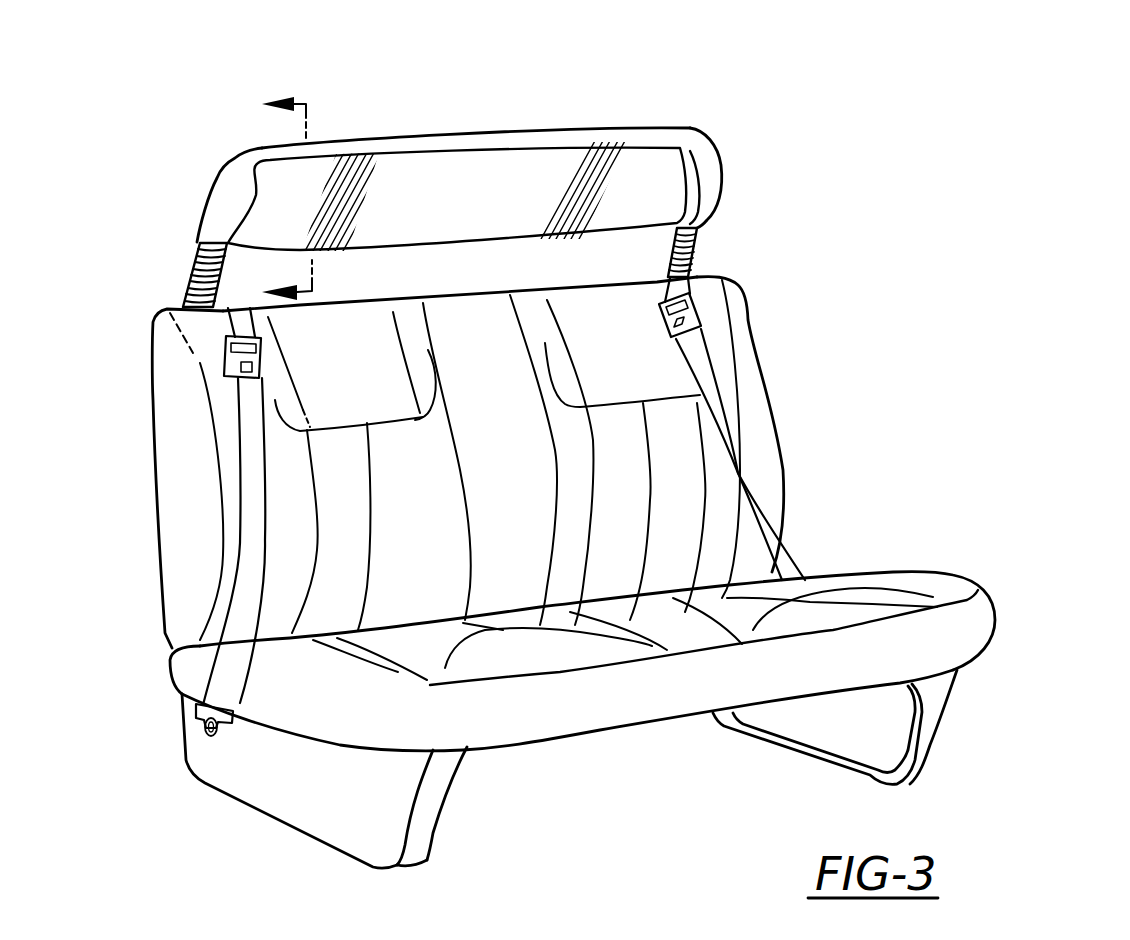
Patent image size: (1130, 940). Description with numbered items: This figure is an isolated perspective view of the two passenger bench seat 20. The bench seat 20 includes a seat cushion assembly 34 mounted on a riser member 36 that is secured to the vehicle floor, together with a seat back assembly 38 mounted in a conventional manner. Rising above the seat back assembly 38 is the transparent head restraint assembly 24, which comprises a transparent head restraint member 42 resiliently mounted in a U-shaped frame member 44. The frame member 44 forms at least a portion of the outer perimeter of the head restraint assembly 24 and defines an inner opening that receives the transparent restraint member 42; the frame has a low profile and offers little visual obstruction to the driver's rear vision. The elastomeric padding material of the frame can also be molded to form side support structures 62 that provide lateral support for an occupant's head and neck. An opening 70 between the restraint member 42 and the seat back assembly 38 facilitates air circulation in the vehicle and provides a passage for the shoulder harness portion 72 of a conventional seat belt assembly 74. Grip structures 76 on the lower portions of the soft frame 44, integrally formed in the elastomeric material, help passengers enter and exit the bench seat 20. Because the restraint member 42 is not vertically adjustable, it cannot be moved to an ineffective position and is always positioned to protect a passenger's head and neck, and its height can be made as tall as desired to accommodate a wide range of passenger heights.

The two passenger bench seat 20 is at (900, 266).
The transparent head restraint assembly 24 is at (698, 124).
The seat cushion assembly 34 is at (982, 632).
The riser member 36 is at (928, 712).
The seat back assembly 38 is at (778, 445).
The transparent head restraint member 42 is at (552, 167).
The U-shaped frame member 44 is at (397, 133).
The side support structures 62 is at (707, 173).
The opening 70 is at (497, 280).
The shoulder harness portion 72 is at (798, 560).
The seat belt assembly 74 is at (712, 308).
The grip structures 76 is at (697, 258).